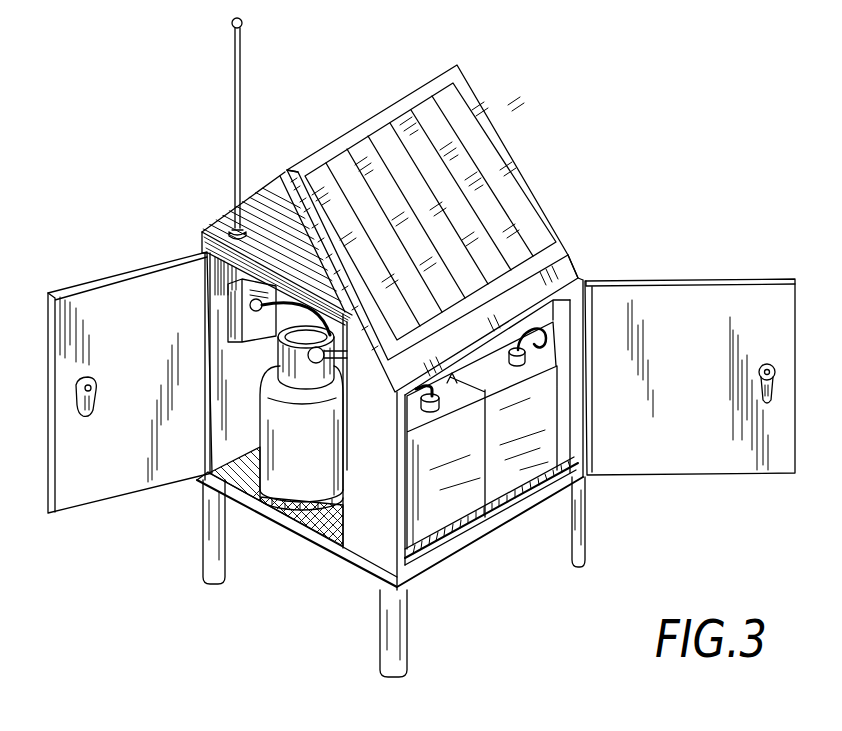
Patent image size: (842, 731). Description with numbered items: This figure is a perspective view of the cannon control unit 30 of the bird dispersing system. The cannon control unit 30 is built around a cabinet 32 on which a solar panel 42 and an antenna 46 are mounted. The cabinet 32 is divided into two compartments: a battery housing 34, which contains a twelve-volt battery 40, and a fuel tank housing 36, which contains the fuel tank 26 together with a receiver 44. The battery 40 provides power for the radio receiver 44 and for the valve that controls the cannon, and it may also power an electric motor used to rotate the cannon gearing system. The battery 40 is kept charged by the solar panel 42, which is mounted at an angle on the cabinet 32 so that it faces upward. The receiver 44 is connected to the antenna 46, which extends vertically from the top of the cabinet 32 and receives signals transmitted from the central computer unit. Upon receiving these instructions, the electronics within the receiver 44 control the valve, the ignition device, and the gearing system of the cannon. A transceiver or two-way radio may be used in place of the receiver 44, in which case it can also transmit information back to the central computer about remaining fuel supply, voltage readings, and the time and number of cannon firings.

The fuel tank 26 is at (313, 463).
The cannon control unit 30 is at (632, 129).
The cabinet 32 is at (287, 533).
The battery housing 34 is at (560, 347).
The fuel tank housing 36 is at (235, 420).
The battery 40 is at (505, 473).
The solar panel 42 is at (463, 150).
The receiver 44 is at (233, 308).
The antenna 46 is at (235, 121).